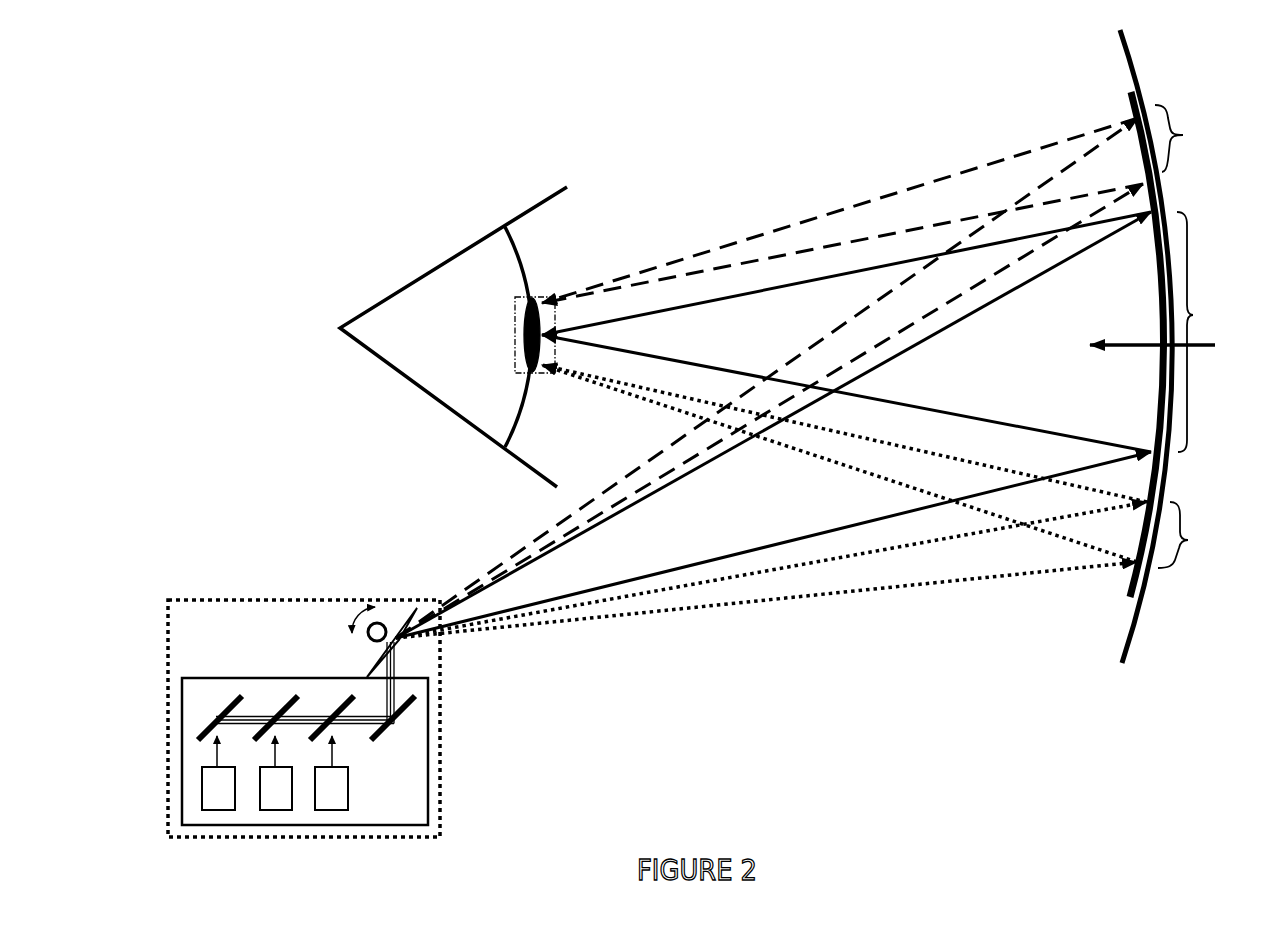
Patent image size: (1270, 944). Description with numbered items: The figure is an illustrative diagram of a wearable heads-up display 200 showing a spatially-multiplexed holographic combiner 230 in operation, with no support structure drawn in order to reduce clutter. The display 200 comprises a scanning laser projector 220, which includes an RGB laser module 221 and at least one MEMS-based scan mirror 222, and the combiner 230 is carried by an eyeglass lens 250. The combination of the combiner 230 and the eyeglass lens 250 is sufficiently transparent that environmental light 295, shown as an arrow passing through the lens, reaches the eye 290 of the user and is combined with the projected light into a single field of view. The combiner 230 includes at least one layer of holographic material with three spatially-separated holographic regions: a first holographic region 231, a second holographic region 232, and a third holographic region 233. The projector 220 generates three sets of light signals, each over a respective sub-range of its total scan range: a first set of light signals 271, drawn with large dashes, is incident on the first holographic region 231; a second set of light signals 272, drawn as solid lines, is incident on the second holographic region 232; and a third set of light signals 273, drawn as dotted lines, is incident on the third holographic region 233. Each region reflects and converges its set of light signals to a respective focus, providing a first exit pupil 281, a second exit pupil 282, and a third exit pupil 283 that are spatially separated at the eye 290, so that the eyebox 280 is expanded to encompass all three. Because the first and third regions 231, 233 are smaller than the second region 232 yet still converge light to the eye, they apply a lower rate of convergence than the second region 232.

The wearable heads-up display 200 is at (222, 198).
The scanning laser projector 220 is at (304, 718).
The RGB laser module 221 is at (305, 733).
The MEMS-based scan mirror 222 is at (368, 636).
The spatially-multiplexed holographic combiner 230 is at (1130, 97).
The first holographic region 231 is at (1191, 138).
The second holographic region 232 is at (1206, 332).
The third holographic region 233 is at (1194, 535).
The eyeglass lens 250 is at (1137, 68).
The first set of light signals 271 is at (565, 522).
The second set of light signals 272 is at (762, 528).
The third set of light signals 273 is at (603, 613).
The eyebox 280 is at (537, 297).
The first exit pupil 281 is at (524, 312).
The second exit pupil 282 is at (524, 335).
The third exit pupil 283 is at (524, 358).
The eye 290 is at (453, 337).
The environmental light 295 is at (1133, 340).